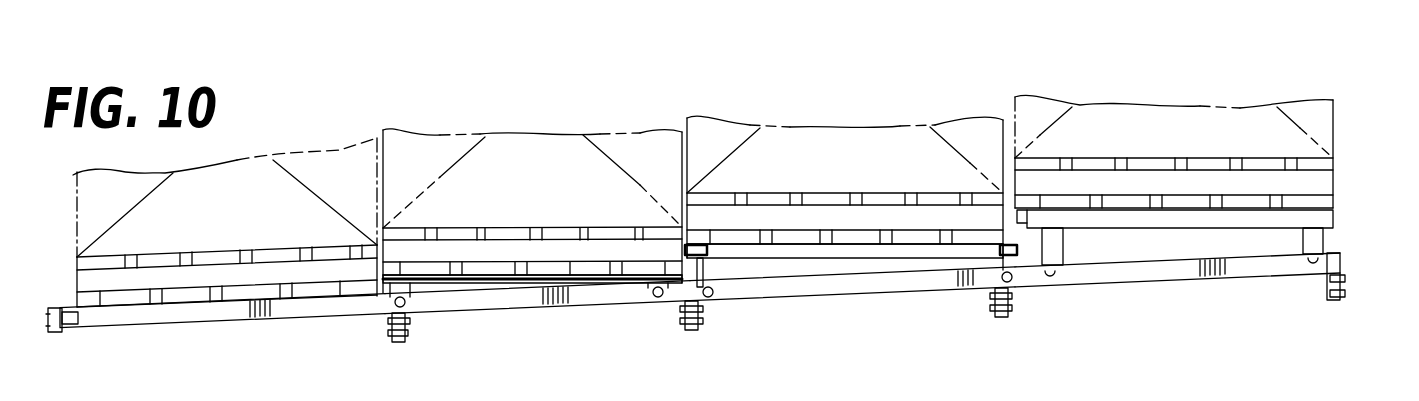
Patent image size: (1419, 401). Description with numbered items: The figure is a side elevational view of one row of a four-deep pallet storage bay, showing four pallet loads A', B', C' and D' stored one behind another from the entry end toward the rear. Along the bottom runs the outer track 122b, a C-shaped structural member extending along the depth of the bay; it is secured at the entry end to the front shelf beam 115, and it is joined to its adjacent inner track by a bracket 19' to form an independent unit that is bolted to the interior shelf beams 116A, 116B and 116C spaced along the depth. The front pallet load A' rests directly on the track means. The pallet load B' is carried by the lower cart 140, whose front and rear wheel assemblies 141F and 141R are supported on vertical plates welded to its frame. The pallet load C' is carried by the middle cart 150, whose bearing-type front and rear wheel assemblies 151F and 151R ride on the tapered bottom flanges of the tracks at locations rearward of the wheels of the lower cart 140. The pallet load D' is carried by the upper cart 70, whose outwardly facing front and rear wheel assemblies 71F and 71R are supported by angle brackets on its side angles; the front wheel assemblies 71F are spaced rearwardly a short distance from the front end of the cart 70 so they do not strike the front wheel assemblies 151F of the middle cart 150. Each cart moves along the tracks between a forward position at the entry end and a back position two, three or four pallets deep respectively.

The pallet load A' is at (225, 194).
The pallet load B' is at (532, 185).
The pallet load C' is at (851, 166).
The pallet load D' is at (1174, 146).
The front shelf beam 115 is at (58, 338).
The outer track 122b is at (292, 320).
The interior shelf beam 116A is at (397, 342).
The lower cart 140 is at (577, 300).
The interior shelf beam 116B is at (690, 328).
The bracket 19' is at (741, 327).
The middle cart 150 is at (902, 262).
The interior shelf beam 116C is at (995, 316).
The upper cart 70 is at (1258, 232).
The front wheel assembly 71F is at (1050, 282).
The rear wheel assembly 71R is at (1312, 265).
The front wheel assembly 141F is at (405, 285).
The rear wheel assembly 141R is at (650, 275).
The front wheel assembly 151F is at (700, 285).
The rear wheel assembly 151R is at (968, 262).